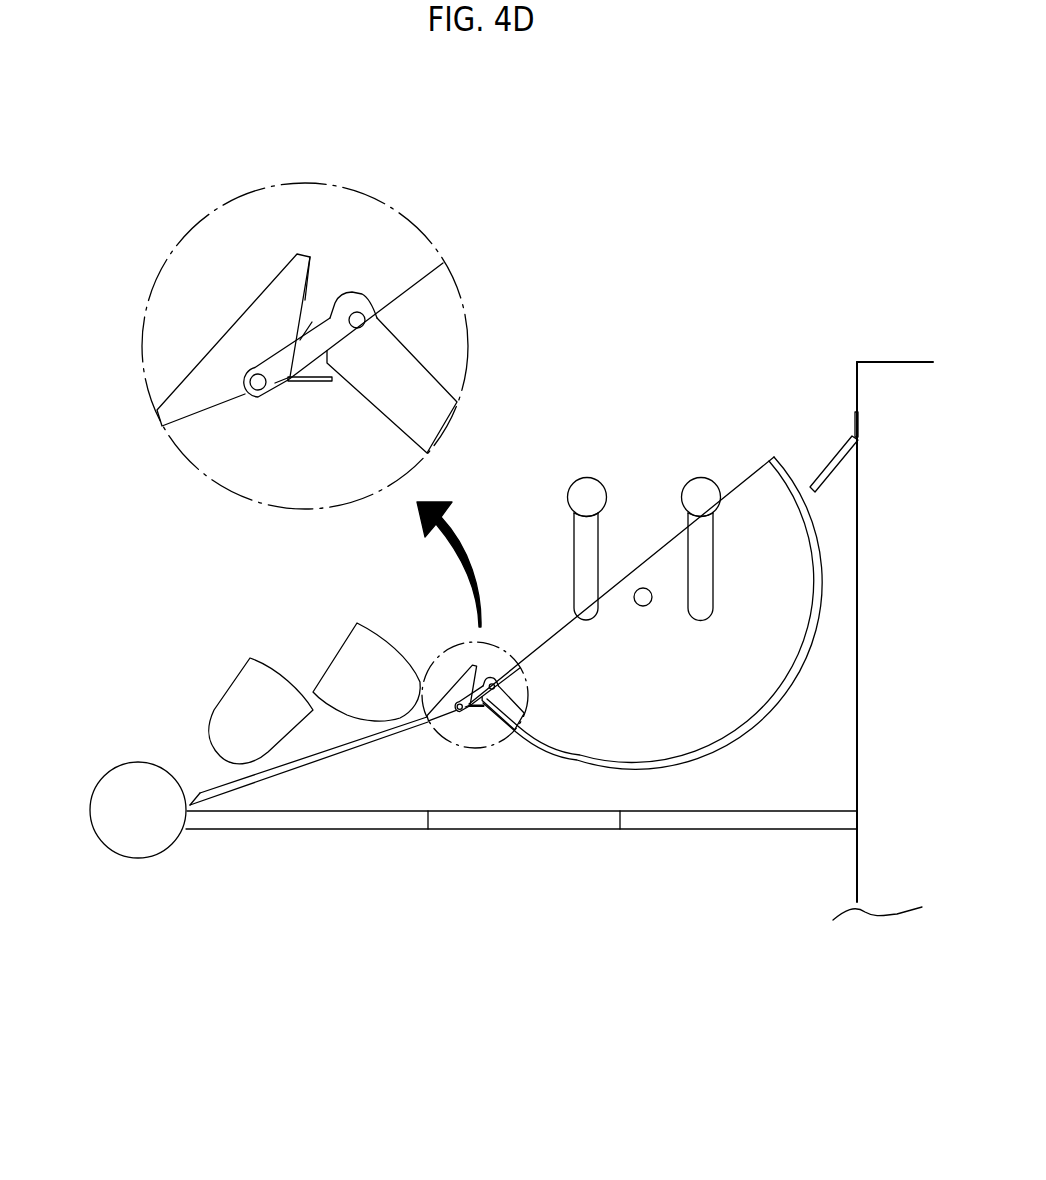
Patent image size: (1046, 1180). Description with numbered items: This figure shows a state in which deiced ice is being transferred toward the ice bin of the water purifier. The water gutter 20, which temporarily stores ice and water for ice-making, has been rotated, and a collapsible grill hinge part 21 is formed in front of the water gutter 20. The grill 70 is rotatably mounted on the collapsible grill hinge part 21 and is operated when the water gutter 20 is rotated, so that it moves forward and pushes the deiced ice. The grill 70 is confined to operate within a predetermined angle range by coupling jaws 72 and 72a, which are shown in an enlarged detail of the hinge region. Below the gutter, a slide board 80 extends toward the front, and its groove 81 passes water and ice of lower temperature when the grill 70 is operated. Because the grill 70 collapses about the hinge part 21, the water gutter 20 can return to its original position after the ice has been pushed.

The water gutter 20 is at (750, 725).
The collapsible grill hinge part 21 is at (273, 360).
The grill 70 is at (192, 380).
The coupling jaw 72 is at (310, 380).
The coupling jaw 72a is at (308, 345).
The slide board 80 is at (311, 822).
The groove 81 is at (533, 822).